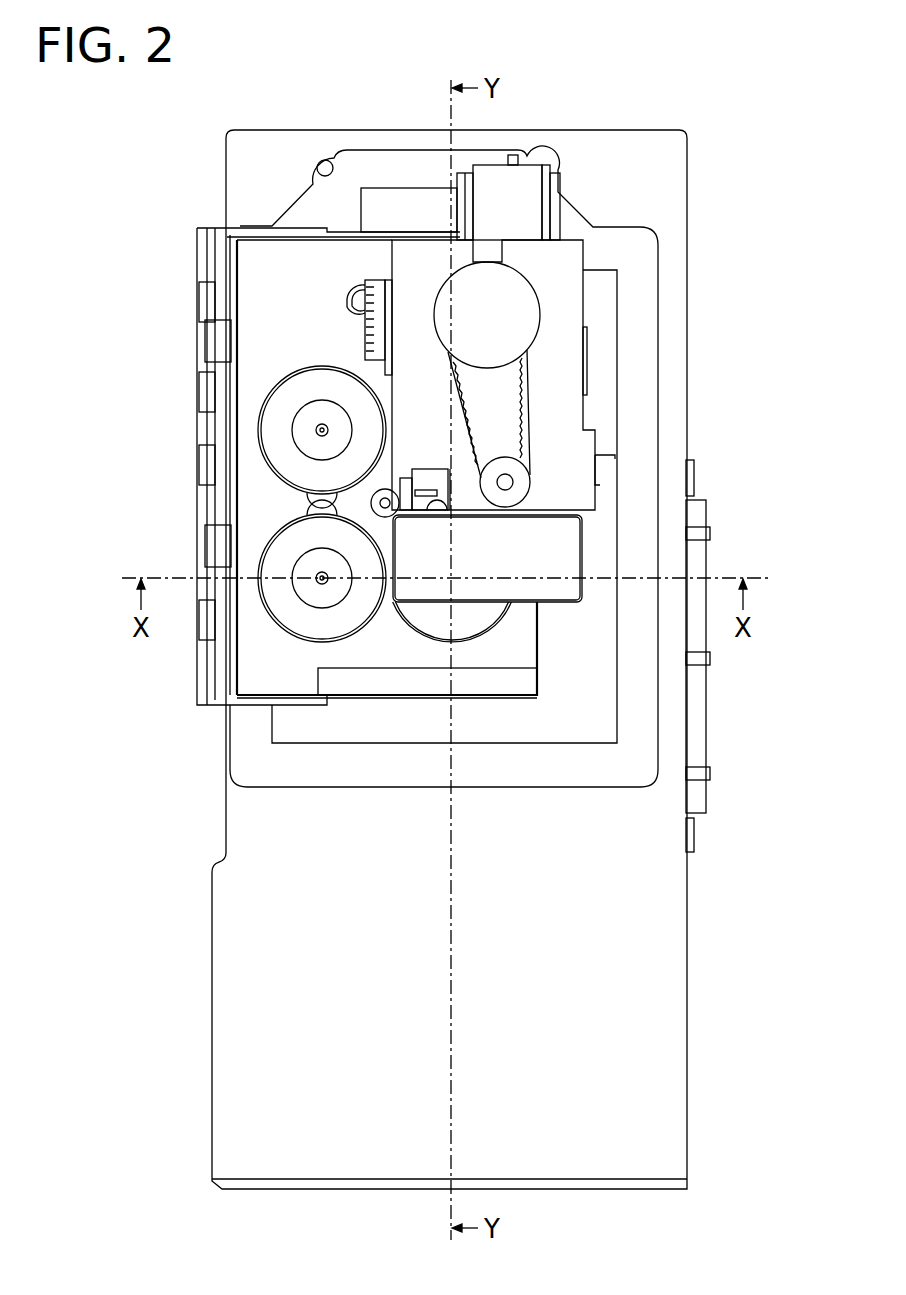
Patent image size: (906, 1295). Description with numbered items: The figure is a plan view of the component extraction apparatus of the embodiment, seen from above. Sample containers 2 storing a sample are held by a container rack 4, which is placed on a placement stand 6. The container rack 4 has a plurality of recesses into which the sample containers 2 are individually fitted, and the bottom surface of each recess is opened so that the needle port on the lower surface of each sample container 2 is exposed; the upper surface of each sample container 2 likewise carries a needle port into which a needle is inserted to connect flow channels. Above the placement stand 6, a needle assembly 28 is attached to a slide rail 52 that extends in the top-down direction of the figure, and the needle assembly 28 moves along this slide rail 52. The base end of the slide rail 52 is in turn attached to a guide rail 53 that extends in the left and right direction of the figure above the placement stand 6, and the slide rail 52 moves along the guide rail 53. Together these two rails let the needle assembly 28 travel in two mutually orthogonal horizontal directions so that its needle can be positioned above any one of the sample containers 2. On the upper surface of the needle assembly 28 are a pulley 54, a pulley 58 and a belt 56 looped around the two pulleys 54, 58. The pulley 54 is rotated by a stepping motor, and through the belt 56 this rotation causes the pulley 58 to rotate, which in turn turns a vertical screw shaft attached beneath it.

The sample container 2 is at (305, 430).
The container rack 4 is at (275, 313).
The placement stand 6 is at (633, 683).
The needle assembly 28 is at (568, 372).
The slide rail 52 is at (520, 203).
The guide rail 53 is at (400, 203).
The pulley 54 is at (518, 297).
The belt 56 is at (530, 430).
The pulley 58 is at (523, 483).